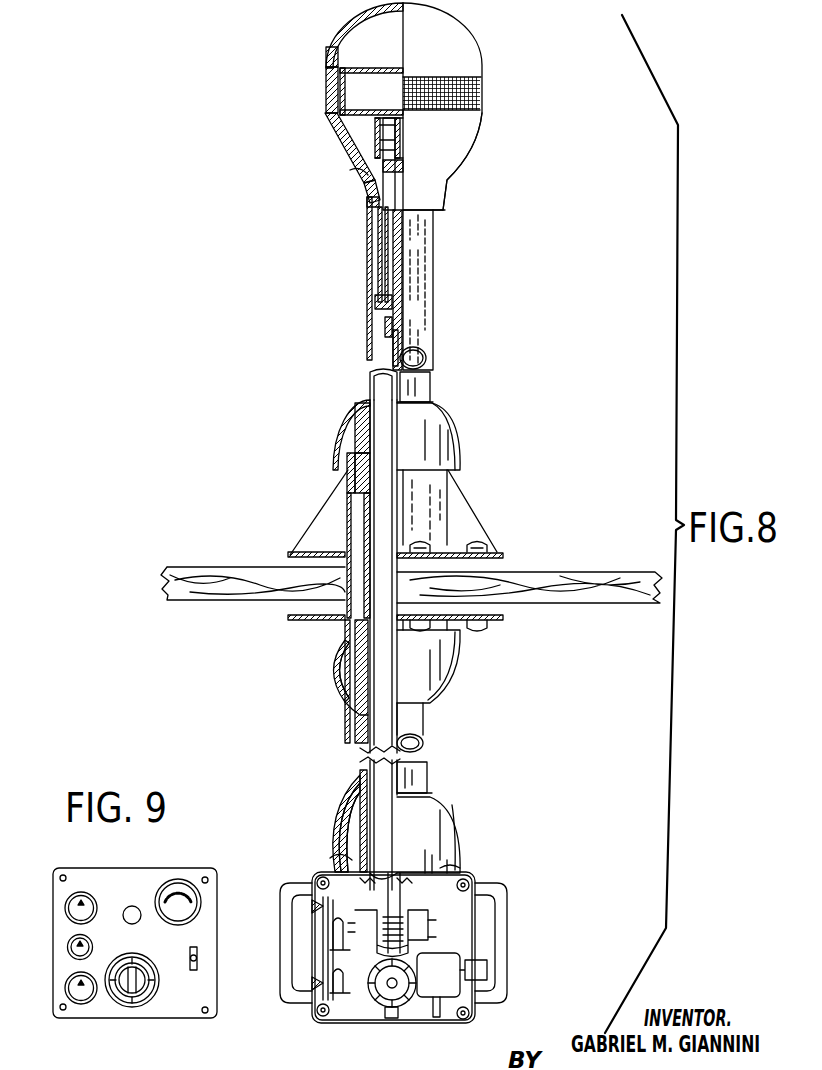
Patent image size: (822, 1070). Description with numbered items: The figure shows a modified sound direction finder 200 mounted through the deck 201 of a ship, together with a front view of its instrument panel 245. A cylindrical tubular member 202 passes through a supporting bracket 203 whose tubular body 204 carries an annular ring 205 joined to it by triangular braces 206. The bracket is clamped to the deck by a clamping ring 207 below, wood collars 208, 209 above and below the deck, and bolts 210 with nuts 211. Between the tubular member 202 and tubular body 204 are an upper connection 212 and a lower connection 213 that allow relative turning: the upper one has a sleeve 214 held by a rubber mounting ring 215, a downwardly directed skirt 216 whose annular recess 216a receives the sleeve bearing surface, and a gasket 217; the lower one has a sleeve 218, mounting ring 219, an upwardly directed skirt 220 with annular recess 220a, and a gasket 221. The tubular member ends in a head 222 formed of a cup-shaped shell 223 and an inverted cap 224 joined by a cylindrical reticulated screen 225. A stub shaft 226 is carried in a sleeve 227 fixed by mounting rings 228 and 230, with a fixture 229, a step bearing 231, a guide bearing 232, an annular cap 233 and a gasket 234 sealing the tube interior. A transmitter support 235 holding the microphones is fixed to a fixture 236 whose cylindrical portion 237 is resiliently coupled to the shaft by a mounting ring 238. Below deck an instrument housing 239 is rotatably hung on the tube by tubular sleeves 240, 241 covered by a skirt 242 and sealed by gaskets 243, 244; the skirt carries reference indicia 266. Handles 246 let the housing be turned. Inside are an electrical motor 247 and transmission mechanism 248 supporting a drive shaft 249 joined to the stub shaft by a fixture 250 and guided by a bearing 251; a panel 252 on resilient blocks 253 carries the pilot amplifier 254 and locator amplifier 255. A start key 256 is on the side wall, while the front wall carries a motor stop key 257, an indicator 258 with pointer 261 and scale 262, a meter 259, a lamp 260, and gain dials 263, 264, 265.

In FIG. 8, the sound direction finder 200 is at (300, 278).
In FIG. 8, the deck 201 is at (590, 575).
In FIG. 8, the tubular member 202 is at (430, 337).
In FIG. 8, the supporting bracket 203 is at (478, 503).
In FIG. 8, the tubular body 204 is at (347, 520).
In FIG. 8, the annular ring 205 is at (290, 553).
In FIG. 8, the triangular braces 206 is at (327, 503).
In FIG. 8, the clamping ring 207 is at (490, 622).
In FIG. 8, the collar 208 is at (507, 560).
In FIG. 8, the collar 209 is at (290, 620).
In FIG. 8, the bolts 210 is at (483, 547).
In FIG. 8, the nuts 211 is at (480, 640).
In FIG. 8, the connection 212 is at (455, 426).
In FIG. 8, the connection 213 is at (455, 703).
In FIG. 8, the sleeve 214 is at (370, 450).
In FIG. 8, the mounting ring 215 is at (350, 472).
In FIG. 8, the skirt 216 is at (352, 423).
In FIG. 8, the annular recess 216a is at (363, 403).
In FIG. 8, the gasket 217 is at (355, 437).
In FIG. 8, the sleeve 218 is at (345, 678).
In FIG. 8, the mounting ring 219 is at (347, 630).
In FIG. 8, the skirt 220 is at (360, 690).
In FIG. 8, the annular recess 220a is at (360, 717).
In FIG. 8, the gasket 221 is at (423, 720).
In FIG. 8, the head 222 is at (473, 28).
In FIG. 8, the cup-shaped shell 223 is at (473, 148).
In FIG. 8, the cap 224 is at (343, 26).
In FIG. 8, the reticulated screen 225 is at (332, 93).
In FIG. 8, the stub shaft 226 is at (396, 253).
In FIG. 8, the sleeve 227 is at (380, 225).
In FIG. 8, the mounting ring 228 is at (370, 200).
In FIG. 8, the fixture 229 is at (386, 320).
In FIG. 8, the mounting ring 230 is at (370, 293).
In FIG. 8, the step bearing 231 is at (393, 182).
In FIG. 8, the guide bearing 232 is at (400, 300).
In FIG. 8, the annular cap 233 is at (377, 172).
In FIG. 8, the gasket 234 is at (400, 167).
In FIG. 8, the transmitter support 235 is at (360, 67).
In FIG. 8, the fixture 236 is at (373, 122).
In FIG. 8, the cylindrical portion 237 is at (377, 147).
In FIG. 8, the mounting ring 238 is at (393, 127).
In FIG. 8, the instrument housing 239 is at (343, 1022).
In FIG. 8, the tubular sleeve 240 is at (340, 813).
In FIG. 8, the tubular sleeve 241 is at (345, 840).
In FIG. 8, the skirt 242 is at (343, 803).
In FIG. 8, the gasket 243 is at (420, 817).
In FIG. 8, the gasket 244 is at (333, 858).
In FIG. 9, the instrument panel 245 is at (143, 870).
In FIG. 8, the handles 246 is at (503, 910).
In FIG. 8, the electrical motor 247 is at (433, 957).
In FIG. 8, the transmission mechanism 248 is at (403, 1000).
In FIG. 8, the drive shaft 249 is at (400, 763).
In FIG. 8, the fixture 250 is at (394, 344).
In FIG. 8, the bearing 251 is at (410, 888).
In FIG. 8, the panel 252 is at (330, 963).
In FIG. 8, the resilient blocks 253 is at (310, 920).
In FIG. 8, the pilot amplifier 254 is at (337, 917).
In FIG. 8, the locator amplifier 255 is at (337, 973).
In FIG. 8, the start key 256 is at (483, 973).
In FIG. 9, the motor stop key 257 is at (188, 953).
In FIG. 9, the indicator 258 is at (157, 988).
In FIG. 9, the meter 259 is at (175, 880).
In FIG. 9, the lamp 260 is at (130, 907).
In FIG. 9, the pointer 261 is at (128, 970).
In FIG. 9, the scale 262 is at (137, 963).
In FIG. 9, the dial 263 is at (75, 907).
In FIG. 9, the dial 264 is at (75, 947).
In FIG. 9, the dial 265 is at (75, 987).
In FIG. 8, the reference indicia 266 is at (433, 867).